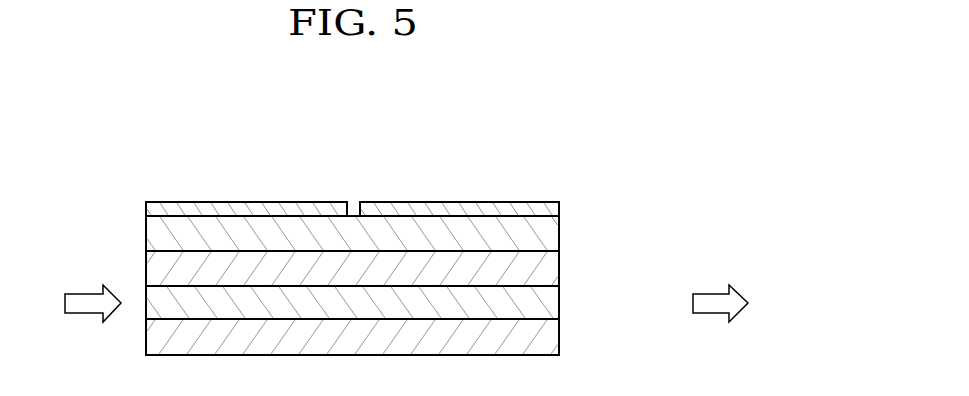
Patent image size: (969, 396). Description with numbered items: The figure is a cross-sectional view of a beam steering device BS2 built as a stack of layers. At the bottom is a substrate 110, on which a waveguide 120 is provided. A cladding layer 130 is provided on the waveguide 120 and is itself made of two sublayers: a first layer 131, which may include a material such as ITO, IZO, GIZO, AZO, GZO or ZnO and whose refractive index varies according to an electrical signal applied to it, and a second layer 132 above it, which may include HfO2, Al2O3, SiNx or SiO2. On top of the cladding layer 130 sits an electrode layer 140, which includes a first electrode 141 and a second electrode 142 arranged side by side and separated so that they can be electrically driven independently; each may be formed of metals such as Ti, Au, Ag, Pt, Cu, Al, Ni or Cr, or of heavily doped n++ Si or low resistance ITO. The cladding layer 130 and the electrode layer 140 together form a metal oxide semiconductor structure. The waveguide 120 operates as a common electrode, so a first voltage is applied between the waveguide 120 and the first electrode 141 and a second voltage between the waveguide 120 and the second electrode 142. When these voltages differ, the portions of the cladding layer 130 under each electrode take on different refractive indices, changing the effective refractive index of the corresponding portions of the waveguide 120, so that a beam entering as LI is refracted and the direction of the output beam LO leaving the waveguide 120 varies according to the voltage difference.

The substrate 110 is at (559, 338).
The waveguide 120 is at (559, 303).
The cladding layer 130 is at (430, 251).
The first layer 131 is at (559, 268).
The second layer 132 is at (559, 234).
The electrode layer 140 is at (398, 180).
The first electrode 141 is at (246, 202).
The second electrode 142 is at (460, 202).
The beam steering device BS2 is at (566, 158).
The input light LI is at (77, 303).
The output beam LO is at (740, 303).